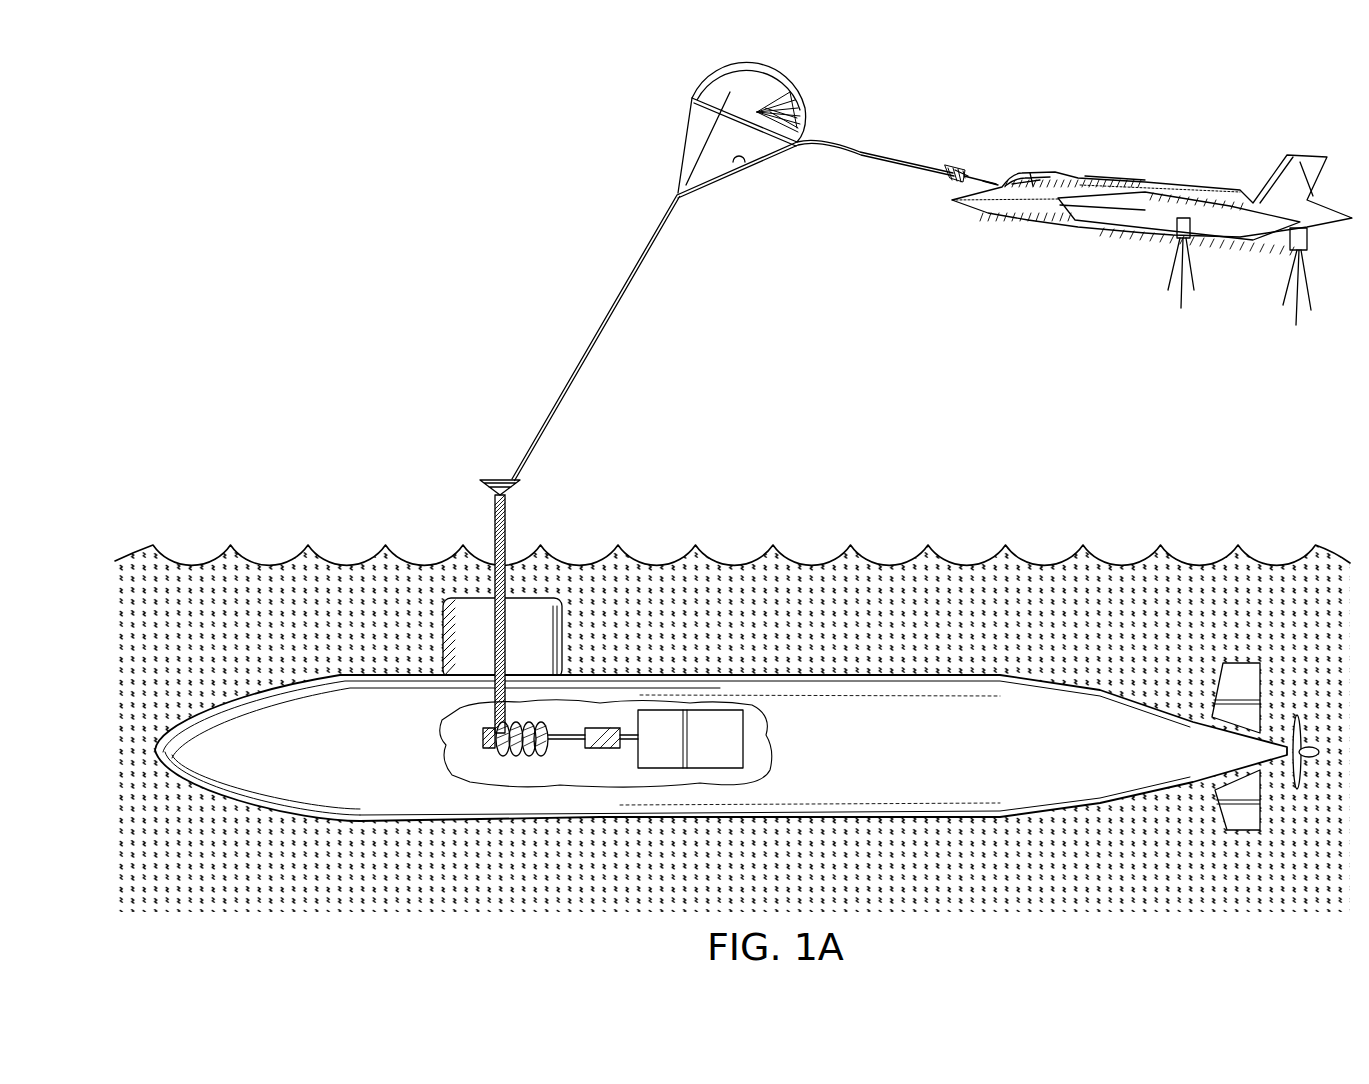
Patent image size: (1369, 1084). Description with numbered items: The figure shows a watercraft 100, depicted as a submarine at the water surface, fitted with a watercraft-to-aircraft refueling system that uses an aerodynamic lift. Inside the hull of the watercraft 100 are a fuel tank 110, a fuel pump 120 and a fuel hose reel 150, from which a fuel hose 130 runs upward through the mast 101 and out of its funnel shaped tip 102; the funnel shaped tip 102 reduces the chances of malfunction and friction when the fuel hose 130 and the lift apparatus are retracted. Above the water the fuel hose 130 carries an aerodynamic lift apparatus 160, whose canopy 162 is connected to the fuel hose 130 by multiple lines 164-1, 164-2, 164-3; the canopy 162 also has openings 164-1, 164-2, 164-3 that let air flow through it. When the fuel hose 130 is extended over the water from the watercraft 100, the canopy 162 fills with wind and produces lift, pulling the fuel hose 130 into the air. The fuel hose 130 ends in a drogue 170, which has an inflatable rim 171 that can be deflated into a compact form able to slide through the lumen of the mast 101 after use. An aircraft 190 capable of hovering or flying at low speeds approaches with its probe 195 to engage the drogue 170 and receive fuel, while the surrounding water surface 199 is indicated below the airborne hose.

The watercraft 100 is at (897, 752).
The mast 101 is at (508, 507).
The funnel shaped tip 102 is at (487, 478).
The fuel tank 110 is at (708, 710).
The fuel pump 120 is at (593, 750).
The fuel hose 130 is at (846, 153).
The fuel hose reel 150 is at (493, 750).
The aerodynamic lift apparatus 160 is at (697, 160).
The canopy 162 is at (718, 78).
The opening / line 164-1 is at (681, 136).
The opening / line 164-2 is at (692, 167).
The opening / line 164-3 is at (806, 178).
The drogue 170 is at (950, 177).
The inflatable rim 171 is at (960, 172).
The aircraft 190 is at (1213, 185).
The probe 195 is at (983, 178).
The water surface 199 is at (992, 557).